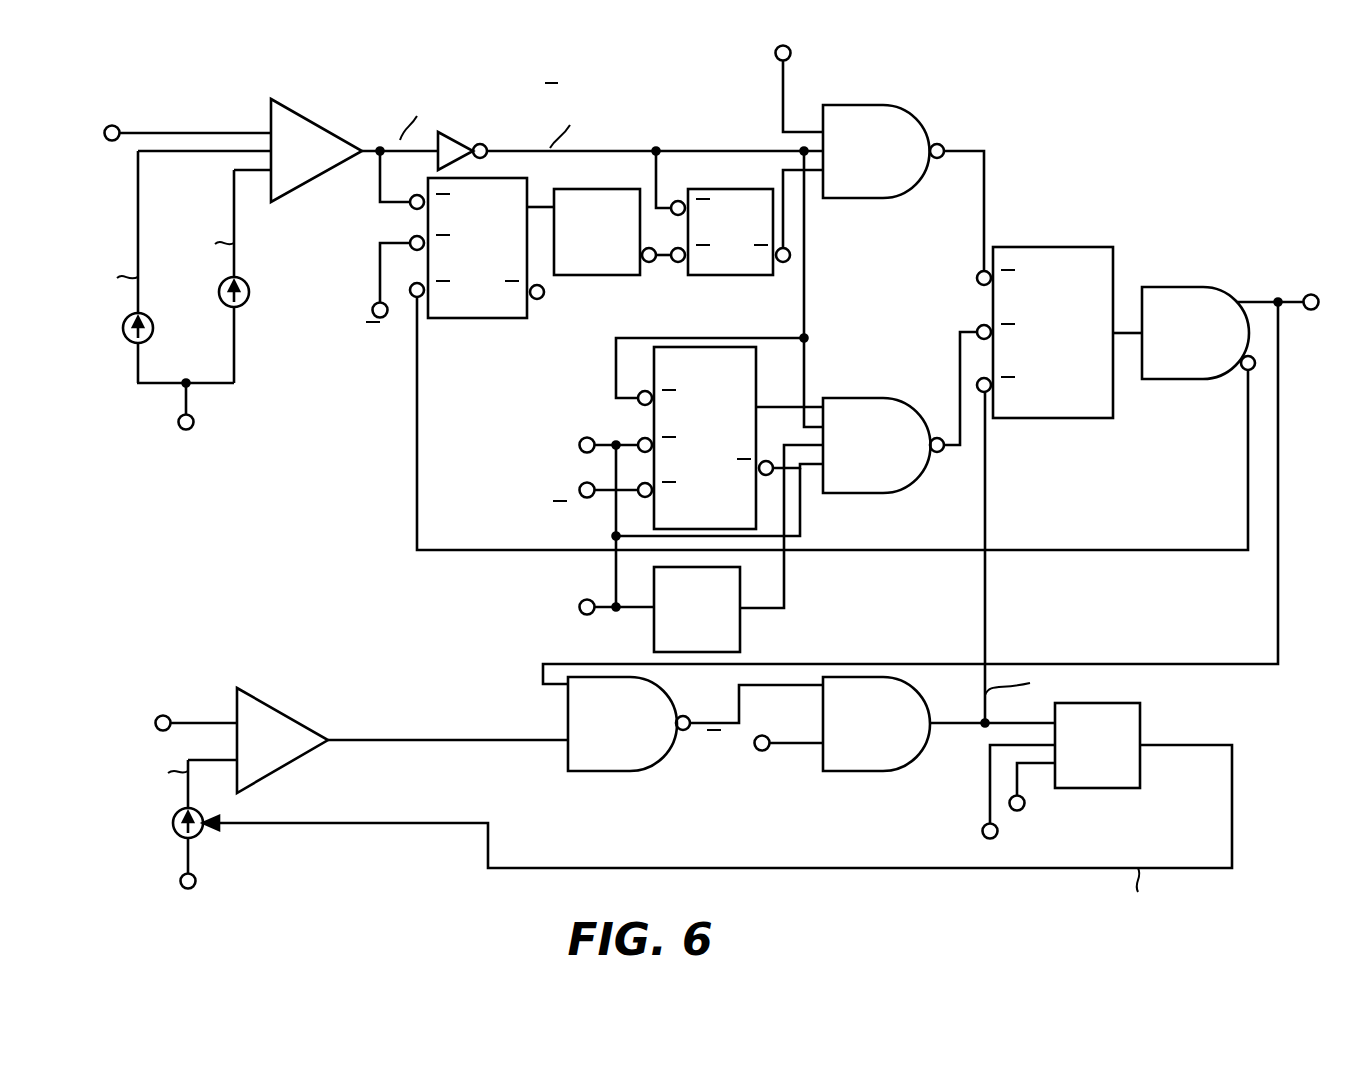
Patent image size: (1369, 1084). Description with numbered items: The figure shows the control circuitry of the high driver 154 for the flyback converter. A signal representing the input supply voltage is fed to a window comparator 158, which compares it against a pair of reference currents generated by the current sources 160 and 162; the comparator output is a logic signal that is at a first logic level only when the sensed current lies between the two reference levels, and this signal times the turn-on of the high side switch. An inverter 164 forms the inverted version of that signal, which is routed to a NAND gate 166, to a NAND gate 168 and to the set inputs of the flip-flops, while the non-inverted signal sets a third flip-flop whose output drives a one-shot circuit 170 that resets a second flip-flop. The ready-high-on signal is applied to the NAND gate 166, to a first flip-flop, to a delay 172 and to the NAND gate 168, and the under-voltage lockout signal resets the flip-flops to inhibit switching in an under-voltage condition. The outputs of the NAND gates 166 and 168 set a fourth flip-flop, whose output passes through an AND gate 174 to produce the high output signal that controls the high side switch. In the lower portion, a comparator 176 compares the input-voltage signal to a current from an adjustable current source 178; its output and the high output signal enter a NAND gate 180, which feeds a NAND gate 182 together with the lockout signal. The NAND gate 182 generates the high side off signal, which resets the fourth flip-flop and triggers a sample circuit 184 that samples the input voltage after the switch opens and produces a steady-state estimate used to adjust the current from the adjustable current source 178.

The high driver 154 is at (1180, 102).
The comparator 158 is at (303, 108).
The current source 160 is at (123, 328).
The current source 162 is at (219, 292).
The inverter 164 is at (455, 133).
The NAND gate 166 is at (921, 118).
The NAND gate 168 is at (870, 398).
The one-shot circuit 170 is at (597, 275).
The delay 172 is at (740, 625).
The AND gate 174 is at (1190, 287).
The comparator 176 is at (278, 708).
The adjustable current source 178 is at (173, 823).
The NAND gate 180 is at (615, 772).
The NAND gate 182 is at (870, 772).
The sample circuit 184 is at (1140, 775).